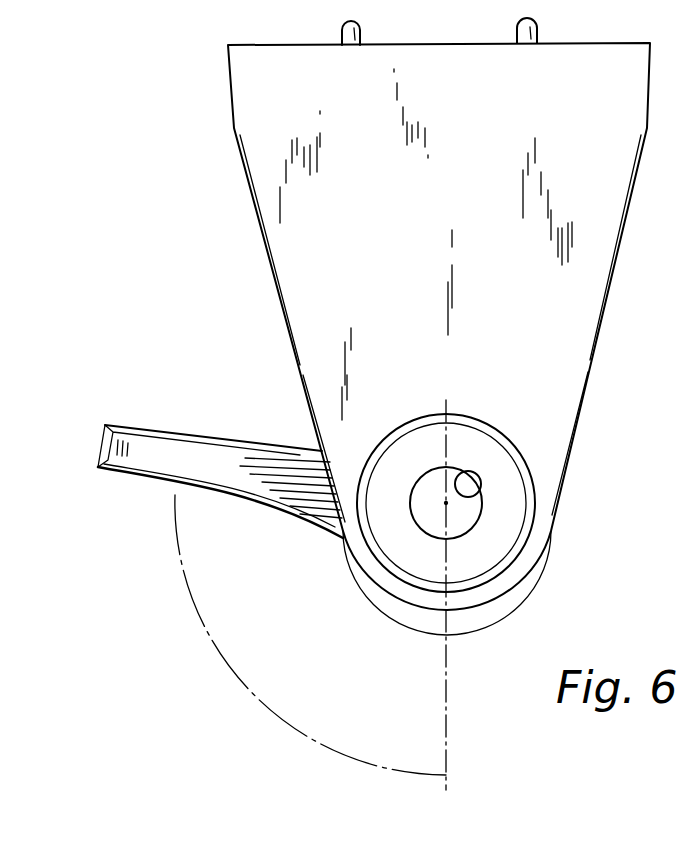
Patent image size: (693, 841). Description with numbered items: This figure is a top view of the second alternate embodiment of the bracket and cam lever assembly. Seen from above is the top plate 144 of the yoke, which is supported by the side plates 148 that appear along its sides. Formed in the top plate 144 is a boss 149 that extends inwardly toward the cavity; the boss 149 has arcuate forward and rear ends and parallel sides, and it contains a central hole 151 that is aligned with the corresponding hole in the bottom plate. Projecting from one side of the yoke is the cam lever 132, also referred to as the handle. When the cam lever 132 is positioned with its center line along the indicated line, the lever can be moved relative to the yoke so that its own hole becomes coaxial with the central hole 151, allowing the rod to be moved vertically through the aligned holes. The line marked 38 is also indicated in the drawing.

The top plate 144 is at (257, 180).
The side plates 148 is at (272, 263).
The cam lever 132 is at (215, 440).
The boss 149 is at (500, 527).
The central hole 151 is at (478, 490).
The pivot axis 38 is at (446, 690).